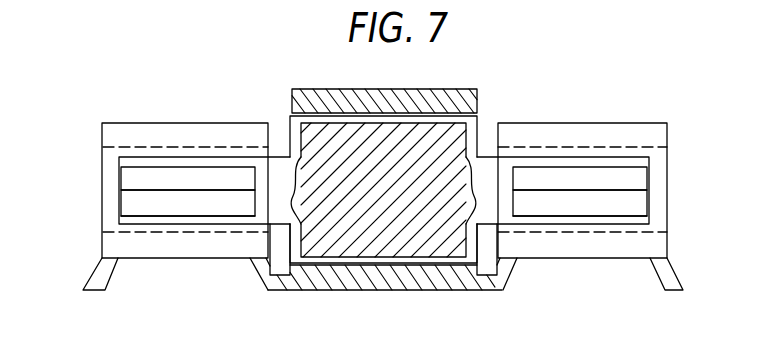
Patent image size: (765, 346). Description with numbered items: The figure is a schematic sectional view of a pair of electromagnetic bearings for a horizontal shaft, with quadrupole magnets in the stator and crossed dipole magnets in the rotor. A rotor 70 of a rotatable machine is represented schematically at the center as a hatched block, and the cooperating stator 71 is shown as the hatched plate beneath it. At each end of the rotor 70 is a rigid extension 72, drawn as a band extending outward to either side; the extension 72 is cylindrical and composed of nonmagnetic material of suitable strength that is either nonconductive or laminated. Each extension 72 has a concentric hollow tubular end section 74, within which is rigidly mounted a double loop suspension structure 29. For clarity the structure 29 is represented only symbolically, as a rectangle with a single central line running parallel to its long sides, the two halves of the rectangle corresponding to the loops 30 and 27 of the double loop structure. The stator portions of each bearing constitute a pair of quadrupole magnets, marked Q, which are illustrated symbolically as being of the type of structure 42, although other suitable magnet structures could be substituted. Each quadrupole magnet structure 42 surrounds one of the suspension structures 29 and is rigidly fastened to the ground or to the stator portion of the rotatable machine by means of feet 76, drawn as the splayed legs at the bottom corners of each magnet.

The rotor 70 is at (433, 132).
The stator 71 is at (384, 287).
The rigid extension 72 is at (281, 171).
The upper window member 30 is at (207, 167).
The lower window member 27 is at (143, 192).
The double loop suspension structure 29 is at (210, 217).
The hollow tubular end section 74 is at (377, 169).
The quadrupole magnet structure 42 is at (158, 133).
The feet 76 is at (98, 291).